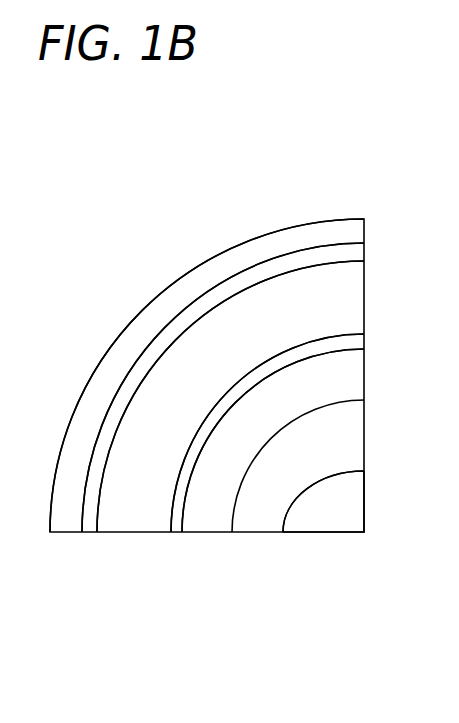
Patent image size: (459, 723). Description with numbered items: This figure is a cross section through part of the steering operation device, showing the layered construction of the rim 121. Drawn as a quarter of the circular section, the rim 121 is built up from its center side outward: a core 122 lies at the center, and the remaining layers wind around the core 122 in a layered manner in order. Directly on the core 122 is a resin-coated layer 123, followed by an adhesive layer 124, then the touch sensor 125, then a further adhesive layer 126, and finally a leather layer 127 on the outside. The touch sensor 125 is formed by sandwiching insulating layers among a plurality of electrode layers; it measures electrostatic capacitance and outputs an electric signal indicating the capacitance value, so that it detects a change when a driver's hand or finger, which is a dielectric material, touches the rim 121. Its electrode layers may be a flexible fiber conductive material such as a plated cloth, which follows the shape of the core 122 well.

The rim 121 is at (228, 213).
The core 122 is at (327, 529).
The resin-coated layer 123 is at (202, 529).
The adhesive layer 124 is at (168, 529).
The touch sensor 125 is at (130, 529).
The adhesive layer 126 is at (88, 529).
The leather layer 127 is at (63, 529).